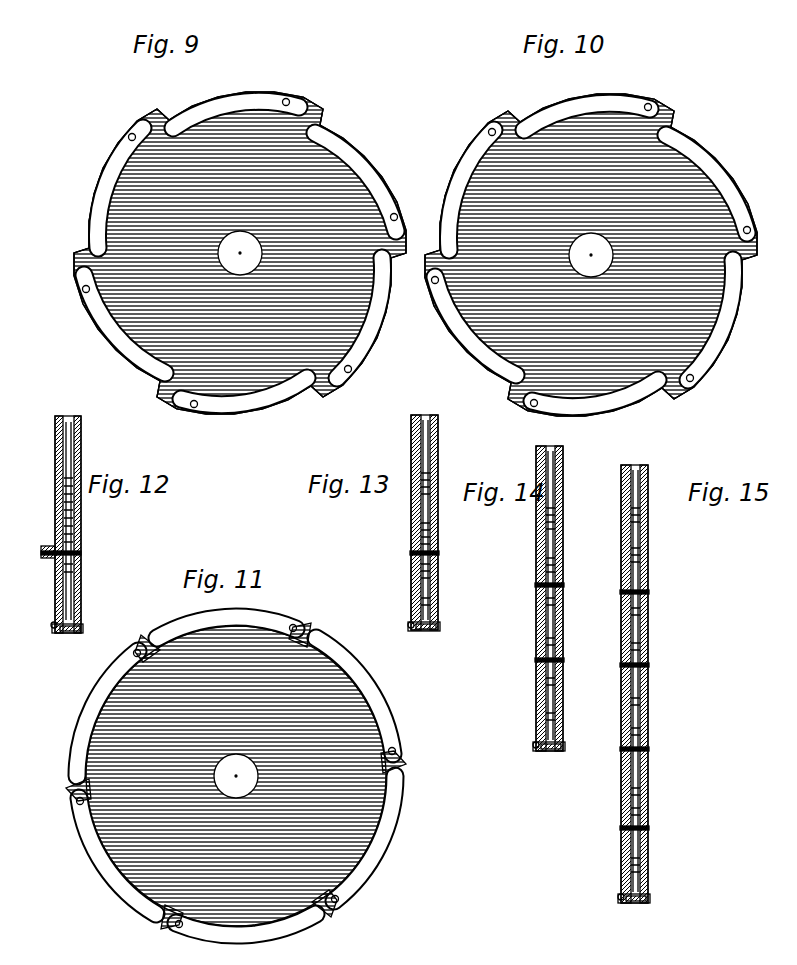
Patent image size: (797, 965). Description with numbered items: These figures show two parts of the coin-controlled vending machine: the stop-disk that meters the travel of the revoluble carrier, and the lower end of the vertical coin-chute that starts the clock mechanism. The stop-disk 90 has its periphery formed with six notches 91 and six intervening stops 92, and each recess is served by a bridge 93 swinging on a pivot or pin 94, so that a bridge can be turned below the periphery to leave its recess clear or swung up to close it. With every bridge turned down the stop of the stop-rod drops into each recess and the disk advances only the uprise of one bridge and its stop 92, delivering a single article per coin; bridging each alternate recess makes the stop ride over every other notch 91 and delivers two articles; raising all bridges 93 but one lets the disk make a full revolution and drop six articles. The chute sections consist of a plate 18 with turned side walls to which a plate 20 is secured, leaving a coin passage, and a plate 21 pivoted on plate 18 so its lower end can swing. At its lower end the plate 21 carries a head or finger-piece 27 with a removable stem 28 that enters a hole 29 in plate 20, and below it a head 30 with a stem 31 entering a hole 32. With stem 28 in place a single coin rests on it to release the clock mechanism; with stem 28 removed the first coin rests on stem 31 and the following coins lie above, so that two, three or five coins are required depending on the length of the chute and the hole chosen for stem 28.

In FIG. 12, the plate 18 is at (50, 432).
In FIG. 13, the plate 18 is at (412, 518).
In FIG. 14, the plate 18 is at (533, 528).
In FIG. 15, the plate 18 is at (618, 538).
In FIG. 13, the plate 20 is at (422, 506).
In FIG. 14, the plate 20 is at (548, 523).
In FIG. 15, the plate 20 is at (635, 681).
In FIG. 13, the plate 21 is at (408, 562).
In FIG. 14, the plate 21 is at (534, 548).
In FIG. 15, the plate 21 is at (636, 535).
In FIG. 12, the head or finger-piece 27 is at (36, 538).
In FIG. 12, the stem 28 is at (74, 545).
In FIG. 12, the hole 29 is at (66, 535).
In FIG. 13, the hole 29 is at (424, 553).
In FIG. 14, the hole 29 is at (556, 577).
In FIG. 15, the hole 29 is at (641, 584).
In FIG. 12, the head 30 is at (43, 617).
In FIG. 13, the head 30 is at (411, 625).
In FIG. 14, the head 30 is at (527, 738).
In FIG. 15, the head 30 is at (611, 891).
In FIG. 12, the stem 31 is at (56, 622).
In FIG. 13, the stem 31 is at (418, 624).
In FIG. 14, the stem 31 is at (552, 737).
In FIG. 15, the stem 31 is at (628, 895).
In FIG. 12, the hole 32 is at (72, 618).
In FIG. 13, the hole 32 is at (432, 620).
In FIG. 14, the hole 32 is at (557, 740).
In FIG. 15, the hole 32 is at (642, 889).
In FIG. 9, the stop-disk 90 is at (240, 253).
In FIG. 10, the stop-disk 90 is at (591, 255).
In FIG. 11, the stop-disk 90 is at (236, 776).
In FIG. 9, the notches 91 is at (237, 260).
In FIG. 10, the notches 91 is at (593, 255).
In FIG. 9, the stops 92 is at (138, 120).
In FIG. 10, the stops 92 is at (591, 255).
In FIG. 11, the stops 92 is at (236, 776).
In FIG. 9, the bridges 93 is at (240, 253).
In FIG. 10, the bridges 93 is at (591, 262).
In FIG. 11, the bridges 93 is at (236, 776).
In FIG. 9, the pivot or pin 94 is at (118, 128).
In FIG. 10, the pivot or pin 94 is at (427, 276).
In FIG. 11, the pivot or pin 94 is at (236, 776).